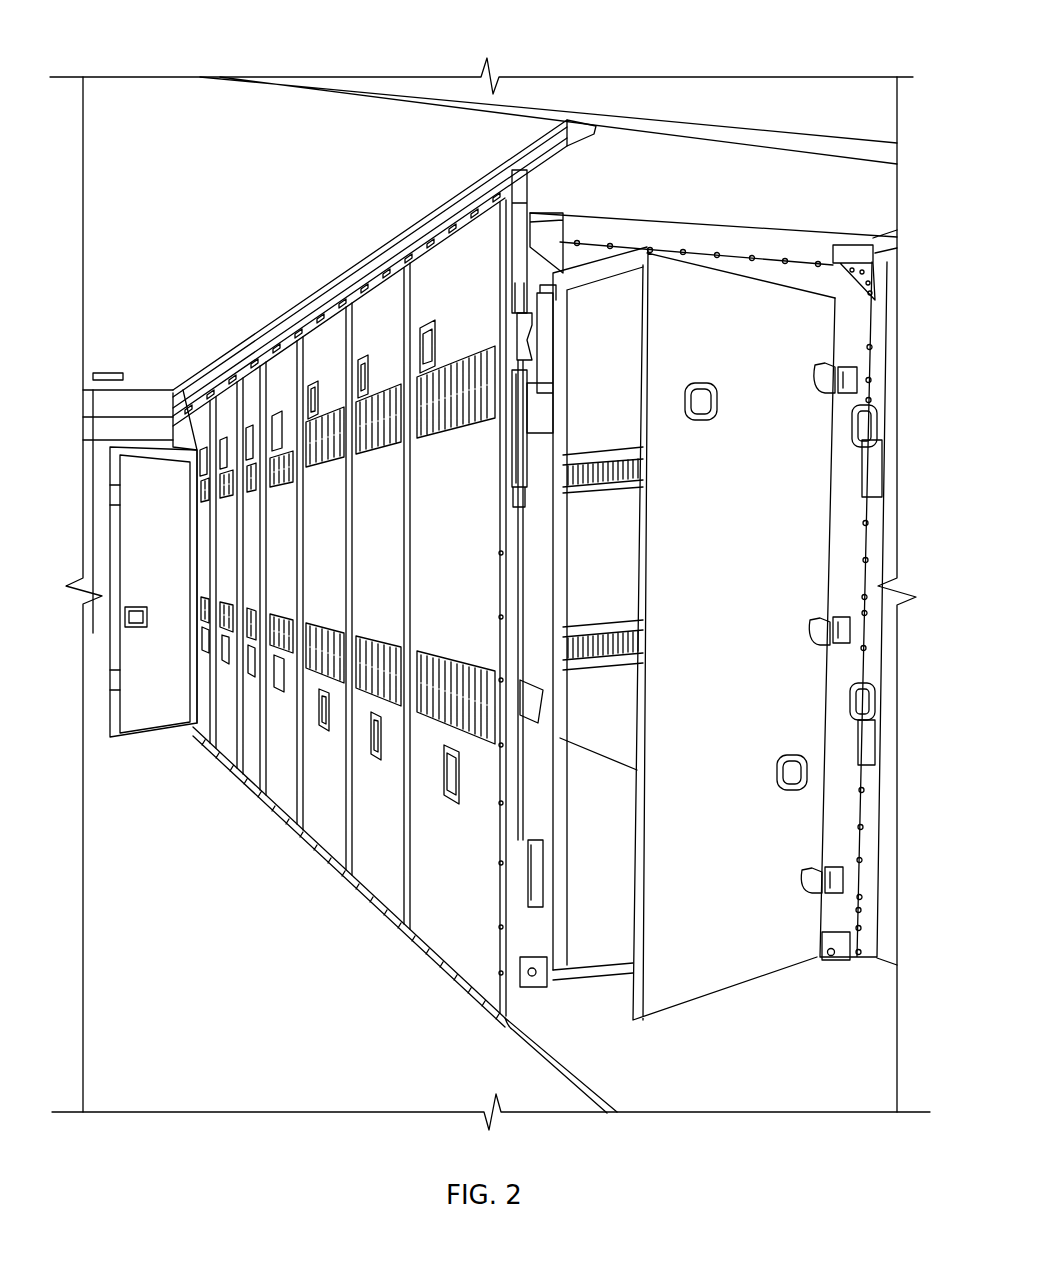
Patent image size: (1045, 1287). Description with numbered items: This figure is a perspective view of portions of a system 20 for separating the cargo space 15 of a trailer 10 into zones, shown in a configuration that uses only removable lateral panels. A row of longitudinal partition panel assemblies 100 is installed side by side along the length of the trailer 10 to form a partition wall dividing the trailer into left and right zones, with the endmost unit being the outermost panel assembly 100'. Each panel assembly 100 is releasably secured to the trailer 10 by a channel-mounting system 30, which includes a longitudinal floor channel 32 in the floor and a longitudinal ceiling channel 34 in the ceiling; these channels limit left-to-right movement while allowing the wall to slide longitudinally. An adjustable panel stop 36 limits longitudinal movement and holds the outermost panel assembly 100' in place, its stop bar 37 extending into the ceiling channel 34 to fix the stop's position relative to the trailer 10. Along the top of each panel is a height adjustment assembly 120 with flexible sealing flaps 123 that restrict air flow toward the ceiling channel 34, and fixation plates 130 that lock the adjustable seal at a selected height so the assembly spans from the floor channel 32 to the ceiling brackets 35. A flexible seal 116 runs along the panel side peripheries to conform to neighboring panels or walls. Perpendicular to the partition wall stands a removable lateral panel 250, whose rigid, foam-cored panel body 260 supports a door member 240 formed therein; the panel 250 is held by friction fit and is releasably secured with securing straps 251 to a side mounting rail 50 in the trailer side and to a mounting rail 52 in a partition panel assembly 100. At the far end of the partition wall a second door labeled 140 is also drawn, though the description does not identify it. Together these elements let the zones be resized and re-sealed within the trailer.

The trailer 10 is at (104, 44).
The cargo space 15 is at (170, 206).
The system for separating cargo spaces 20 is at (155, 145).
The channel-mounting system 30 is at (312, 208).
The longitudinal floor channel 32 is at (548, 1063).
The longitudinal ceiling channel 34 is at (368, 242).
The ceiling brackets 35 is at (593, 128).
The adjustable panel stop 36 is at (504, 242).
The stop bar 37 is at (522, 194).
The side mounting rail 50 is at (582, 487).
The mounting rail 52 is at (458, 666).
The longitudinal partition panel assembly 100 is at (280, 596).
The outermost panel assembly 100' is at (435, 608).
The flexible seal 116 is at (407, 514).
The height adjustment assembly 120 is at (440, 237).
The flexible sealing flaps 123 is at (468, 215).
The fixation plate 130 is at (480, 207).
The door 140 is at (168, 543).
The door member 240 is at (753, 530).
The removable lateral panel 250 is at (624, 206).
The securing straps 251 is at (850, 411).
The panel body 260 is at (93, 633).